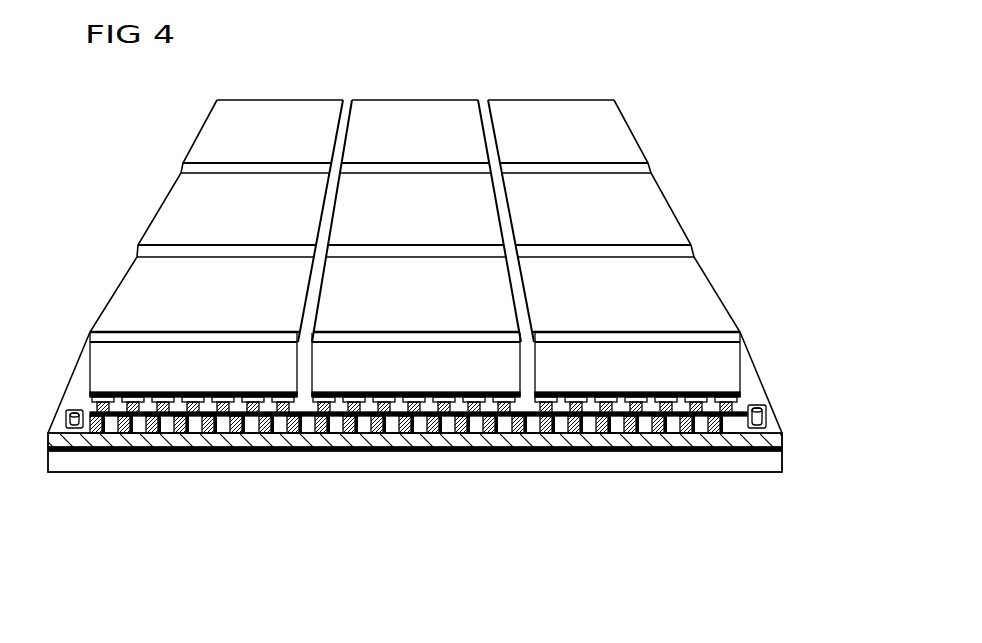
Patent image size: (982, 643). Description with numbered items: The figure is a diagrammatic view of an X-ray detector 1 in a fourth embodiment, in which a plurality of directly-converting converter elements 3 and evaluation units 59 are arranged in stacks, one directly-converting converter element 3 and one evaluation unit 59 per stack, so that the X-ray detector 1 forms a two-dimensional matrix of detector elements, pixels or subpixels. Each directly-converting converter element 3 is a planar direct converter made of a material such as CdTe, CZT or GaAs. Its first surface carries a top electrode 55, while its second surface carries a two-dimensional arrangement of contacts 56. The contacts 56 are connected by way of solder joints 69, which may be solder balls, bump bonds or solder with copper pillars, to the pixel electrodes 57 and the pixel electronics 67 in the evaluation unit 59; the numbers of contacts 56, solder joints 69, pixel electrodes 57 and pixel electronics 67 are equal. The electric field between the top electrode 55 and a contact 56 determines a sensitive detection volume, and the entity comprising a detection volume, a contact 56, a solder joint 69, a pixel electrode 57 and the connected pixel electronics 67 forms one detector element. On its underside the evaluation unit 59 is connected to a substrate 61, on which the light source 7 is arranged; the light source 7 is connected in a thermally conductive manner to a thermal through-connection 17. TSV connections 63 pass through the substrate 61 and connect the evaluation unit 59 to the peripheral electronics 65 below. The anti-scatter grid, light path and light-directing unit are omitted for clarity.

The X-ray detector 1 is at (177, 130).
The directly-converting converter element 3 is at (723, 360).
The top electrode 55 is at (90, 335).
The contacts 56 is at (740, 400).
The solder joints 69 is at (92, 404).
The light source 7 is at (63, 412).
The pixel electrodes 57 is at (260, 423).
The pixel electronics 67 is at (400, 423).
The evaluation unit 59 is at (693, 425).
The substrate 61 is at (782, 440).
The TSV connections 63 is at (587, 448).
The peripheral electronics 65 is at (778, 462).
The thermal through-connection 17 is at (57, 453).